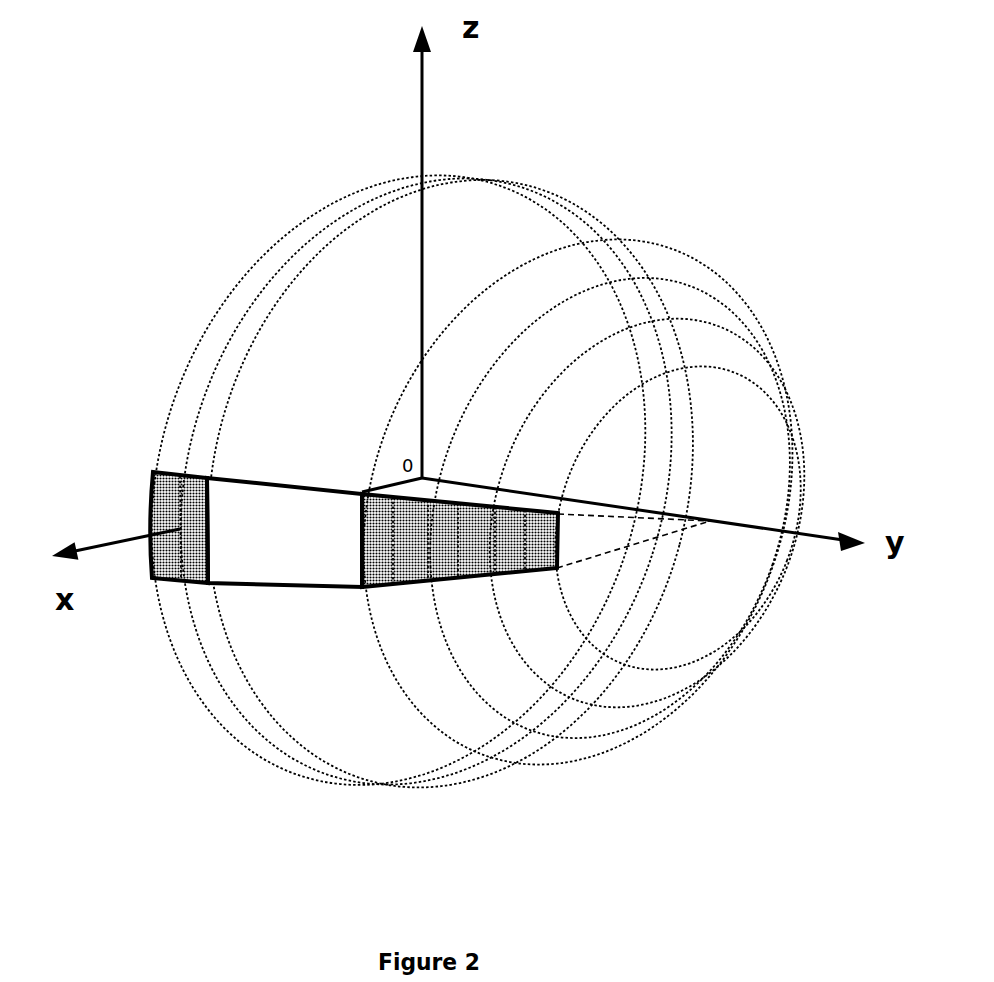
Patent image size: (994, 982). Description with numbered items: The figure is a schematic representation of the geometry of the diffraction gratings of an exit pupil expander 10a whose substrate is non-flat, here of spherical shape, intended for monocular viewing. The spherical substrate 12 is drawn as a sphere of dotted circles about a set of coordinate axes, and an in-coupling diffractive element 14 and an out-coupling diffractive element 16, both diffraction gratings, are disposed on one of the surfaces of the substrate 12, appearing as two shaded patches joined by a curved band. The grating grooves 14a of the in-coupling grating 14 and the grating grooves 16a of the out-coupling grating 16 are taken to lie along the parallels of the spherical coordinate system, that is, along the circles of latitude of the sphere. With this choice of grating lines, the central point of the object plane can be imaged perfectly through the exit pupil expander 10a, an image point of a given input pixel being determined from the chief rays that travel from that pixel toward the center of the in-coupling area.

The exit pupil expander 10a is at (314, 418).
The non-flat substrate 12 is at (317, 547).
The in-coupling diffractive element 14 is at (182, 552).
The grating grooves 14a is at (177, 563).
The out-coupling diffractive element 16 is at (447, 546).
The grating grooves 16a is at (428, 532).